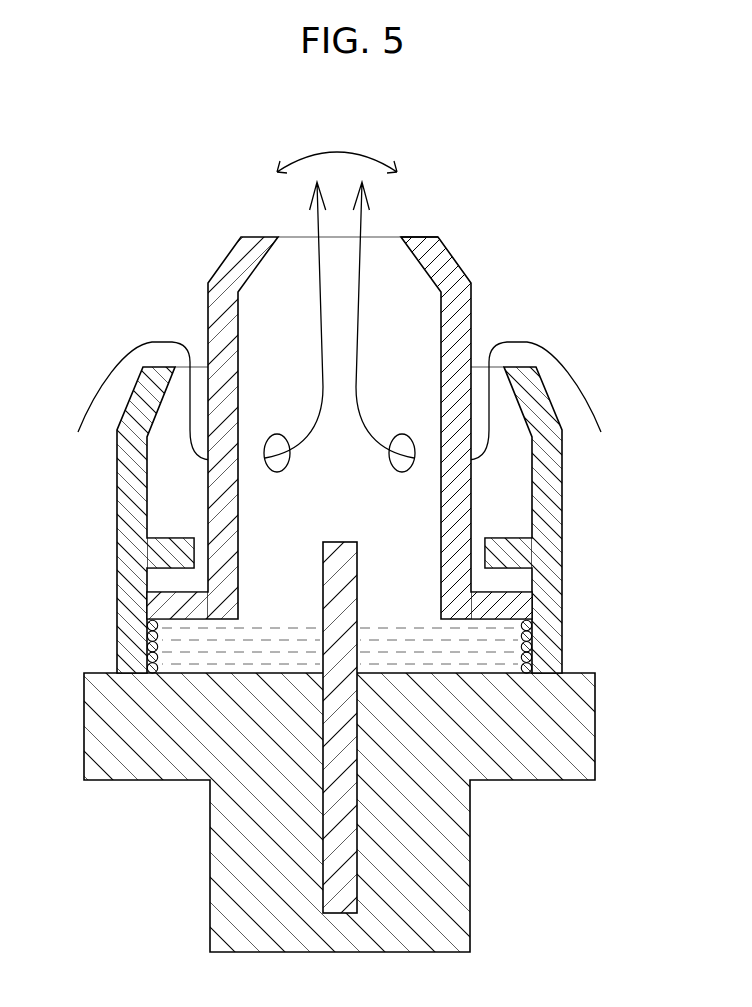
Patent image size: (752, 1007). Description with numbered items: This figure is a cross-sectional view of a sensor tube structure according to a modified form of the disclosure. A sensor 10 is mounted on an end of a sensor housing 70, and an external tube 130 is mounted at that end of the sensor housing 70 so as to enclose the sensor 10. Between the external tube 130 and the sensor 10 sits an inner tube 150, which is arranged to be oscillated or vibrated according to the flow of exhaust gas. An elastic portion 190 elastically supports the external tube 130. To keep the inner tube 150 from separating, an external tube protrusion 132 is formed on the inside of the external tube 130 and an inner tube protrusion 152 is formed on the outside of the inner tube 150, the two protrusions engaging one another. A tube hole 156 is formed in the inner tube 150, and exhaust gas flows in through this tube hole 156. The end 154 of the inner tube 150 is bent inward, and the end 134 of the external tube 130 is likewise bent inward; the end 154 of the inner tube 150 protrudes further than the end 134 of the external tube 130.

The sensor 10 is at (345, 813).
The sensor housing 70 is at (422, 942).
The external tube 130 is at (347, 507).
The external tube protrusion 132 is at (173, 543).
The end of the external tube 134 is at (130, 413).
The inner tube 150 is at (339, 399).
The inner tube protrusion 152 is at (168, 598).
The end of the inner tube 154 is at (425, 247).
The tube hole 156 is at (280, 437).
The elastic portion 190 is at (147, 633).